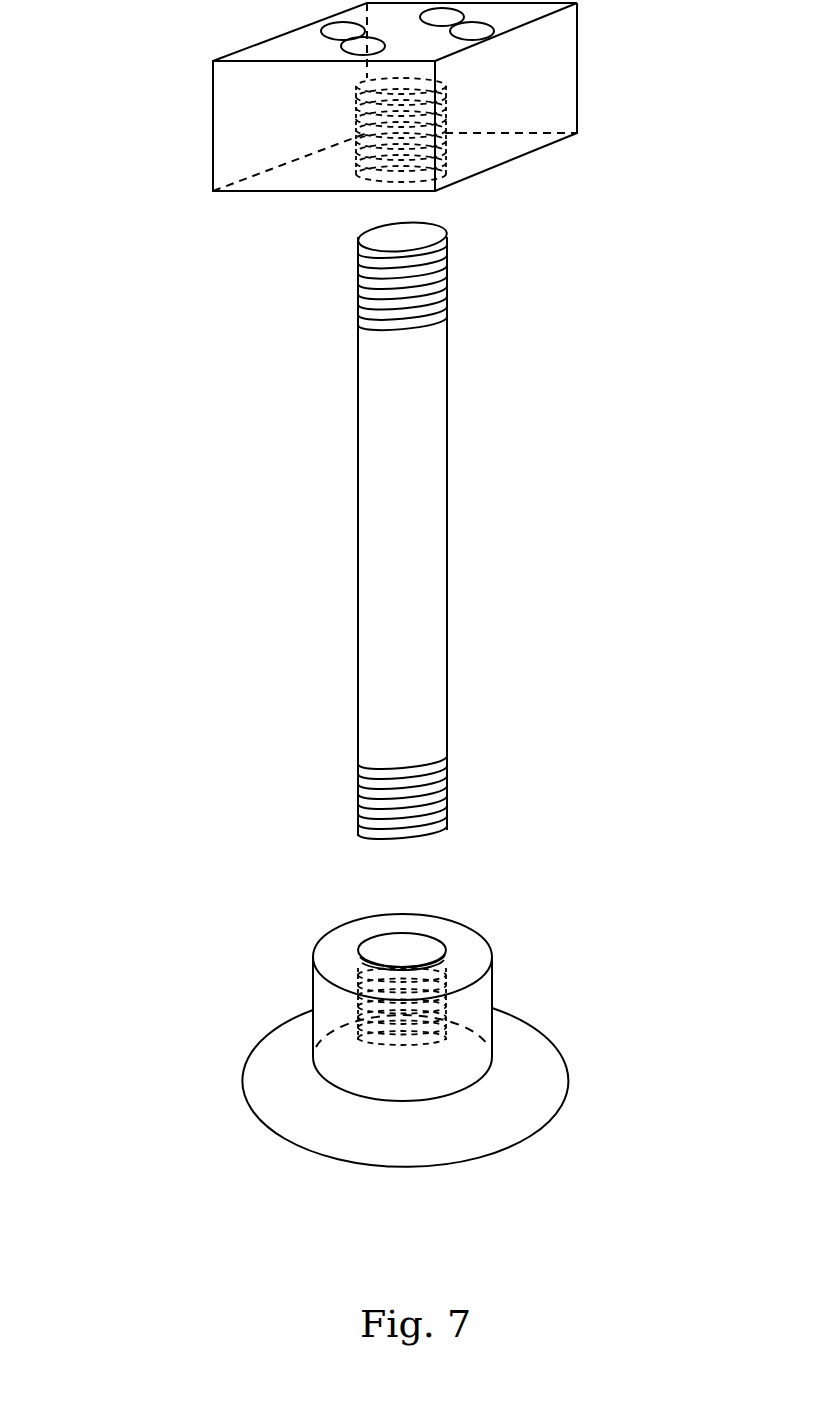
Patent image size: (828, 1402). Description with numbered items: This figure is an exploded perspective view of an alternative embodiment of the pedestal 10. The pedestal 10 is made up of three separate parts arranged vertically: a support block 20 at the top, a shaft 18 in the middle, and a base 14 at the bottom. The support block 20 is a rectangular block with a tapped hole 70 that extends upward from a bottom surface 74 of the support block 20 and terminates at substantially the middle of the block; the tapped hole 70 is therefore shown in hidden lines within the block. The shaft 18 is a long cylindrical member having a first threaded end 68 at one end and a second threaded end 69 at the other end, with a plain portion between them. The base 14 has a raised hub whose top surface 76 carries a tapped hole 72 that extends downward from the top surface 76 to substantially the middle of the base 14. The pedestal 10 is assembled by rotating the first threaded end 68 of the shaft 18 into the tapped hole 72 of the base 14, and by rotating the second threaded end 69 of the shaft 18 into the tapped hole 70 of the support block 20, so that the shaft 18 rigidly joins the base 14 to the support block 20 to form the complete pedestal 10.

The pedestal 10 is at (240, 427).
The base 14 is at (455, 1006).
The shaft 18 is at (496, 529).
The support block 20 is at (416, 151).
The first threaded end 68 is at (447, 273).
The second threaded end 69 is at (447, 778).
The tapped hole 70 is at (438, 168).
The tapped hole 72 is at (443, 945).
The bottom surface 74 is at (280, 192).
The top surface 76 is at (410, 915).